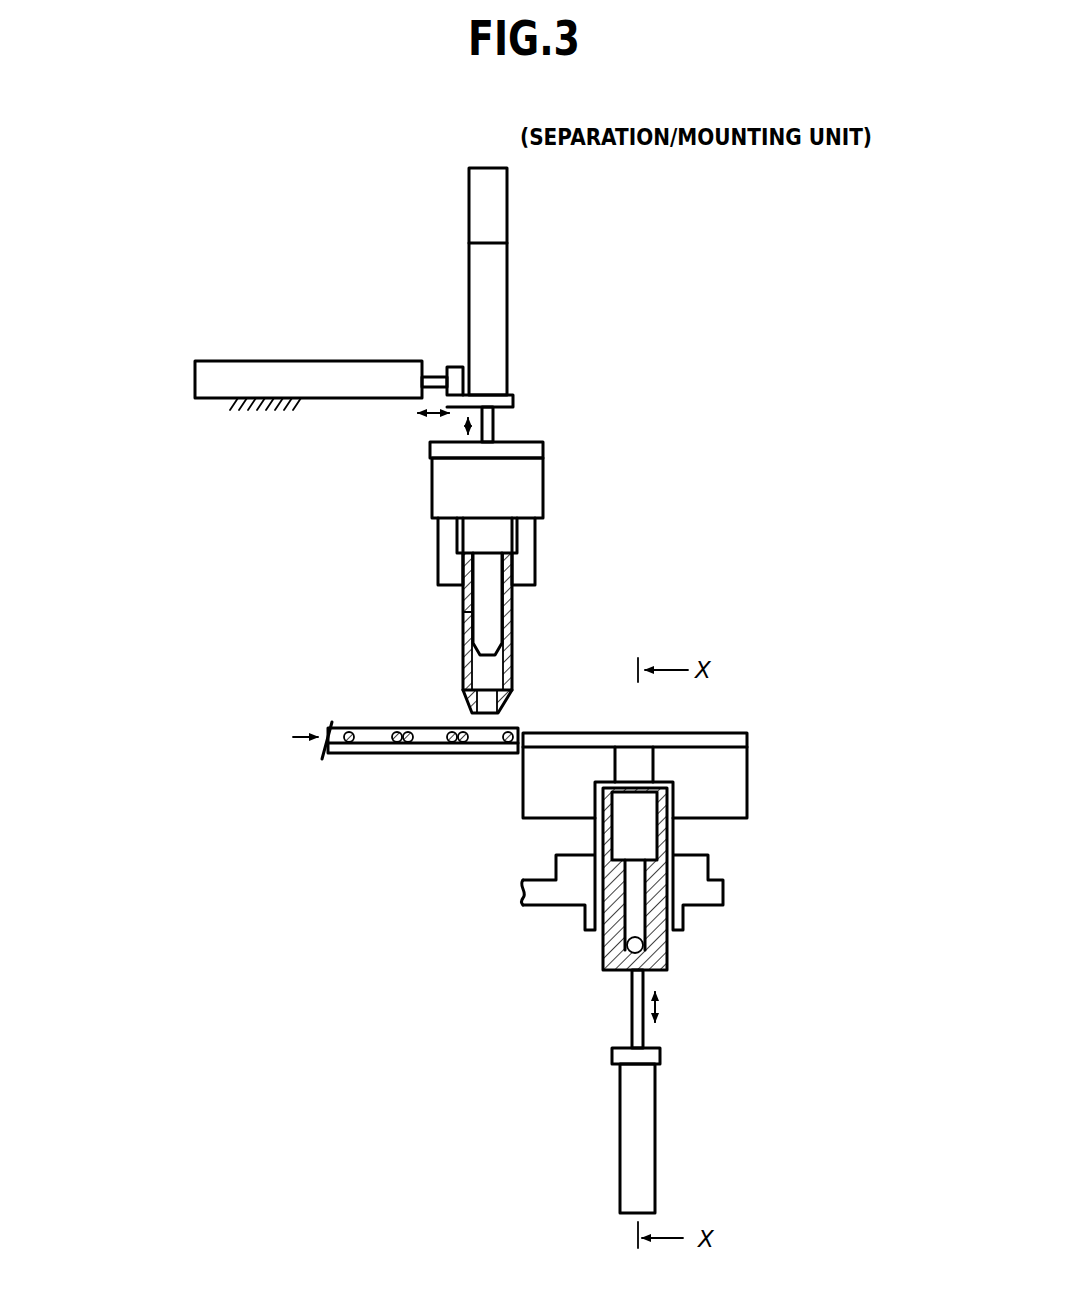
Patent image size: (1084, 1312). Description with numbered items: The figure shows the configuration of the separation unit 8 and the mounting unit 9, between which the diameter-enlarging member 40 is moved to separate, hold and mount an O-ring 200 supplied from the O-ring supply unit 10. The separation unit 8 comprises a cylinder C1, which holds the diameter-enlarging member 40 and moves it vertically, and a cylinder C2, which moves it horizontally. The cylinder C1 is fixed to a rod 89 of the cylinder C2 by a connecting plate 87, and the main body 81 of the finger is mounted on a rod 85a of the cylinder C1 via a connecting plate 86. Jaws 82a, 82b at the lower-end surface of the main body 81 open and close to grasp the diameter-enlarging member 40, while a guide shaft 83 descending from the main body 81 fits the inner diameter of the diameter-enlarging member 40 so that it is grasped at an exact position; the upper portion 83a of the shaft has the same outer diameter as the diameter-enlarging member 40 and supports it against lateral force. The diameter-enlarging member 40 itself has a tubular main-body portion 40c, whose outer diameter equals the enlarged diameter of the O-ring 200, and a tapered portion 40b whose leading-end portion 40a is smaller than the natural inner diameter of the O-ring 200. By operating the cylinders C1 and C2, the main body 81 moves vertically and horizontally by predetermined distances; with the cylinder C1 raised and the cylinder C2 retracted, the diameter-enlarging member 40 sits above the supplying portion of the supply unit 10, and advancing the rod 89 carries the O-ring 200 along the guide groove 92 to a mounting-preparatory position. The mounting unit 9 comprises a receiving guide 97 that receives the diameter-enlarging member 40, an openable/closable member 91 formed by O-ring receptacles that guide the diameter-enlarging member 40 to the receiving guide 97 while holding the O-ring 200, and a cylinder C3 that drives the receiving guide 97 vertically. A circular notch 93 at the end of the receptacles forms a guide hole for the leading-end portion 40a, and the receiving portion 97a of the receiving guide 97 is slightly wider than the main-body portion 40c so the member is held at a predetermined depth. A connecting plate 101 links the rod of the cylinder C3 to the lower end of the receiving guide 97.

The cylinder C2 is at (242, 372).
The rod 89 is at (444, 370).
The cylinder C1 is at (492, 328).
The connecting plate 87 is at (506, 397).
The rod 85a is at (490, 430).
The separation unit 8 is at (684, 401).
The connecting plate 86 is at (535, 452).
The main body of the finger 81 is at (530, 500).
The jaw 82a is at (444, 560).
The jaw 82b is at (525, 563).
The guide shaft 83 is at (497, 632).
The upper portion of the shaft 83a is at (498, 636).
The diameter-enlarging member 40 is at (512, 692).
The leading-end portion 40a is at (497, 714).
The tapered portion 40b is at (465, 700).
The tubular main-body portion 40c is at (465, 613).
The O-ring 200 is at (447, 727).
The O-ring supply unit 10 is at (358, 725).
The guide groove 92 is at (590, 737).
The circular notch 93 is at (640, 757).
The openable/closable member 91 is at (730, 777).
The mounting unit 9 is at (762, 797).
The receiving portion 97a is at (643, 845).
The receiving guide 97 is at (667, 963).
The connecting plate 101 is at (655, 1057).
The cylinder C3 is at (645, 1160).